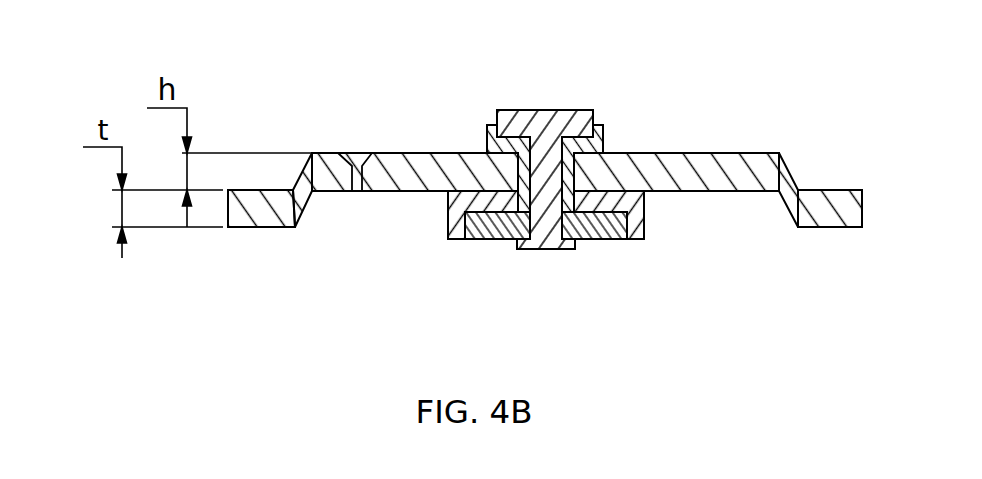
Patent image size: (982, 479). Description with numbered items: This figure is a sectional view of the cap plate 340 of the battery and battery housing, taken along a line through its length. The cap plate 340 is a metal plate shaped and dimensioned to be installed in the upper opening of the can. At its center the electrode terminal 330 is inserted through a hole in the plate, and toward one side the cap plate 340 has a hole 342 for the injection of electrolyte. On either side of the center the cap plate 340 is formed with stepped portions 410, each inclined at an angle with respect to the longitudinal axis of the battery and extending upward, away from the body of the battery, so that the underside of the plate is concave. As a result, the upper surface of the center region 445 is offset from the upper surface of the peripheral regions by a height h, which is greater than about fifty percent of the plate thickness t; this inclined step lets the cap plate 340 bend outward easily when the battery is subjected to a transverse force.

The stepped portion 410 is at (303, 153).
The hole 342 is at (358, 153).
The electrode terminal 330 is at (553, 128).
The cap plate 340 is at (833, 200).
The center region 445 is at (547, 187).